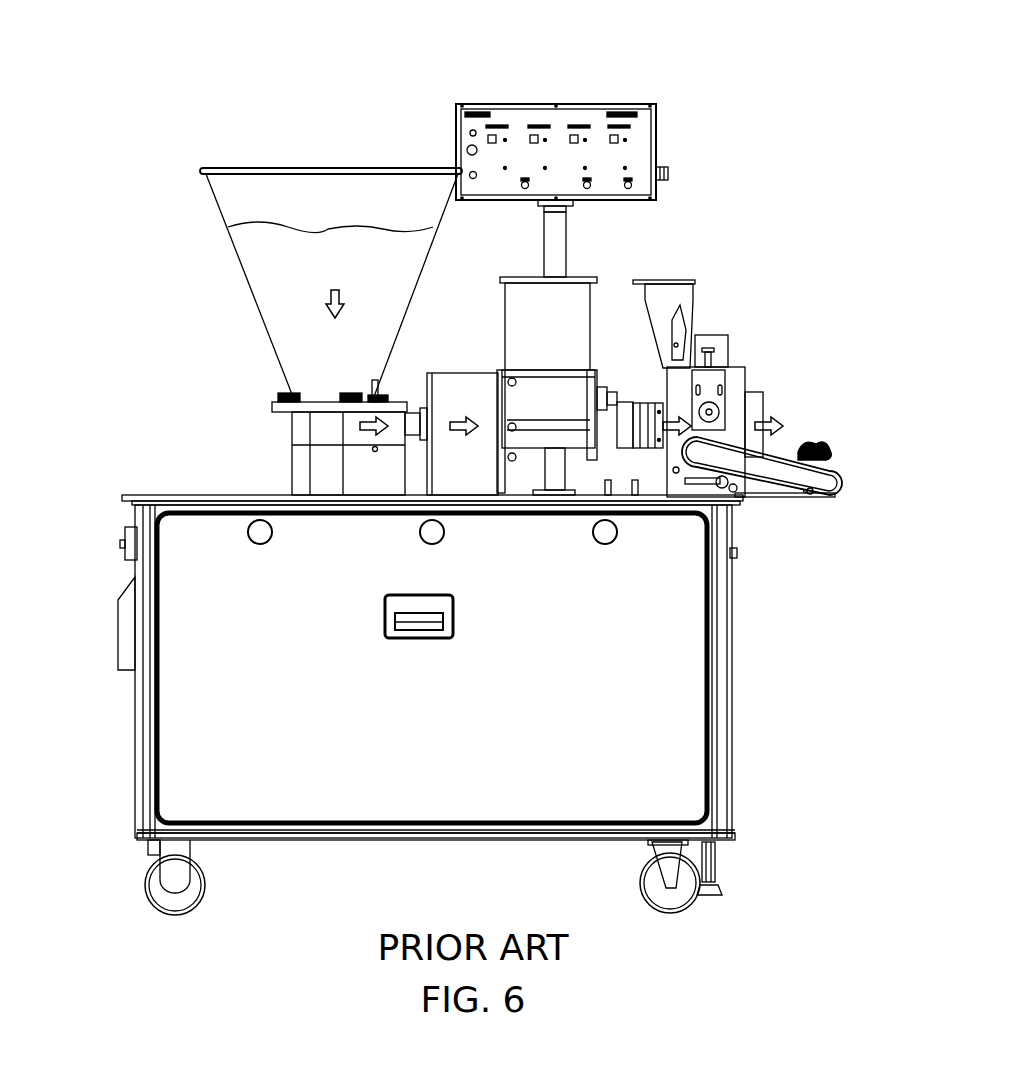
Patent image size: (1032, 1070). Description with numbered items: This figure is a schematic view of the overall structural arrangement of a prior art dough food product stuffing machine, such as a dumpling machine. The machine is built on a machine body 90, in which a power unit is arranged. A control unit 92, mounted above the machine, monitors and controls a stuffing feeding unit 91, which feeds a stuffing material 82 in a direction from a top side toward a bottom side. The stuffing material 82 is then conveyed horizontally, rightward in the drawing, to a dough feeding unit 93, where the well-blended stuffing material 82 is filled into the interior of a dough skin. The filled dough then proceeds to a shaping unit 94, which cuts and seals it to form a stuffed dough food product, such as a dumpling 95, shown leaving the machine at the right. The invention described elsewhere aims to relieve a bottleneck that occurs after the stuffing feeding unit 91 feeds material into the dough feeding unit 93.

The stuffing material 82 is at (253, 276).
The machine body 90 is at (119, 488).
The stuffing feeding unit 91 is at (214, 362).
The control unit 92 is at (638, 97).
The dough feeding unit 93 is at (605, 270).
The shaping unit 94 is at (791, 403).
The dumpling 95 is at (817, 440).